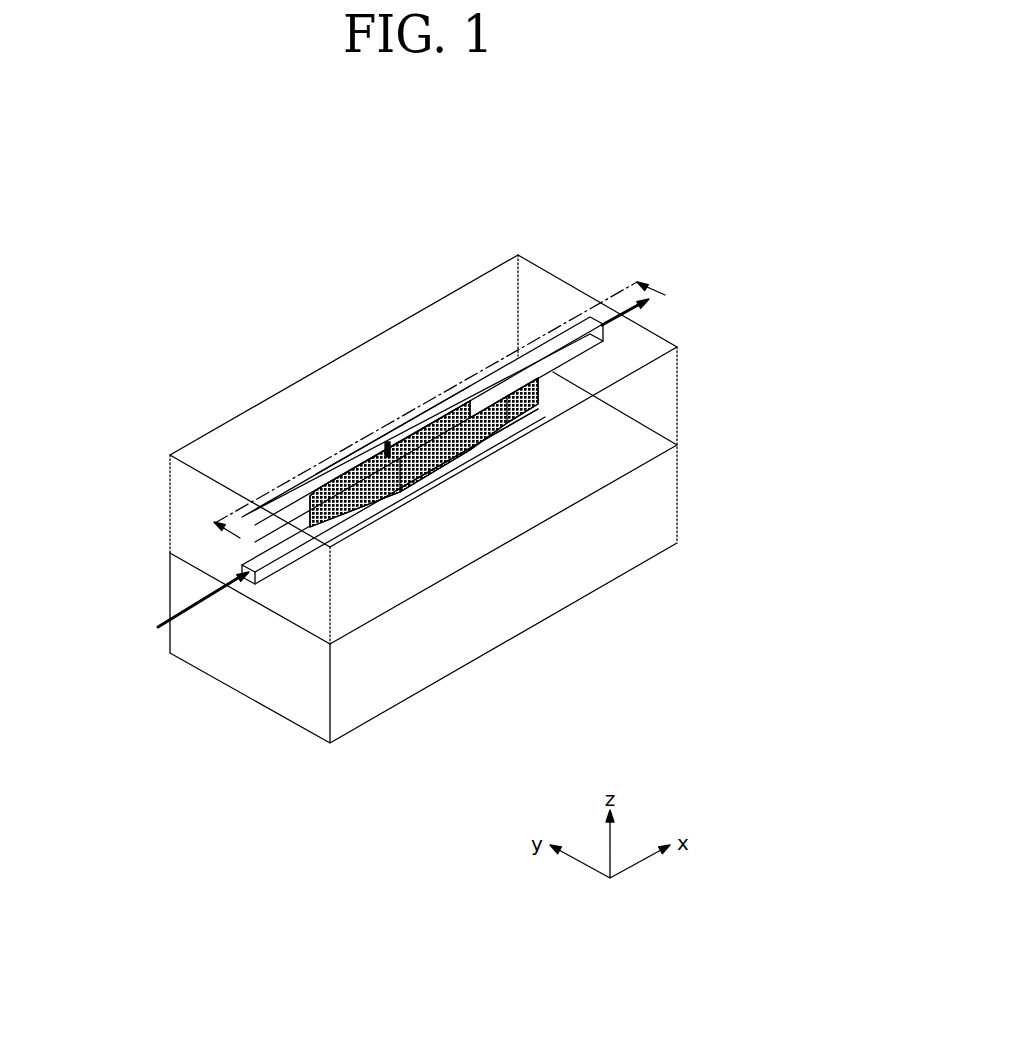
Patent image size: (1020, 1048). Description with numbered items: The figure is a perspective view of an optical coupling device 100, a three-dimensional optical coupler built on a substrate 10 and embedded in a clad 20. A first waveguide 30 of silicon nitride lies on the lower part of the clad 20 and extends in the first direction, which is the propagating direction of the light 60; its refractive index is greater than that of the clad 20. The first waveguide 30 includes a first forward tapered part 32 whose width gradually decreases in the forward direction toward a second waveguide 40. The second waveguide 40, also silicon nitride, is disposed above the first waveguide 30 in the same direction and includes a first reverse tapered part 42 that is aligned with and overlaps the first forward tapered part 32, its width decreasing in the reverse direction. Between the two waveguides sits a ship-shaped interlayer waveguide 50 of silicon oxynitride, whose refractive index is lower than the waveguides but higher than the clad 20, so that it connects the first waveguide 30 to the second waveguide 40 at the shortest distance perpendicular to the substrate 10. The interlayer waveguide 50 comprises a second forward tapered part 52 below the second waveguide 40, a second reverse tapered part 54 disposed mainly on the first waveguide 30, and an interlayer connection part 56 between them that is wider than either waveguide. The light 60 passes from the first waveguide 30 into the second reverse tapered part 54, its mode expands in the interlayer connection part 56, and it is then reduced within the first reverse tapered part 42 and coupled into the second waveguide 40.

The optical coupling device 100 is at (246, 289).
The substrate 10 is at (668, 508).
The clad 20 is at (672, 400).
The first waveguide 30 is at (340, 527).
The first forward tapered part 32 is at (393, 470).
The second waveguide 40 is at (502, 375).
The first reverse tapered part 42 is at (447, 407).
The interlayer waveguide 50 is at (570, 703).
The second forward tapered part 52 is at (533, 398).
The second reverse tapered part 54 is at (460, 448).
The interlayer connection part 56 is at (507, 420).
The light 60 is at (166, 622).